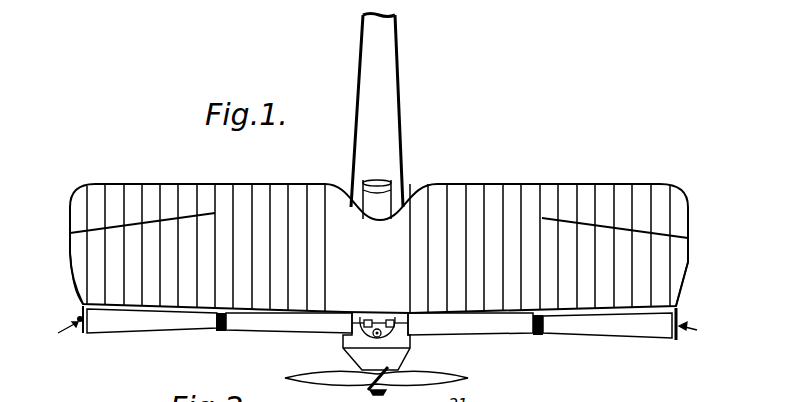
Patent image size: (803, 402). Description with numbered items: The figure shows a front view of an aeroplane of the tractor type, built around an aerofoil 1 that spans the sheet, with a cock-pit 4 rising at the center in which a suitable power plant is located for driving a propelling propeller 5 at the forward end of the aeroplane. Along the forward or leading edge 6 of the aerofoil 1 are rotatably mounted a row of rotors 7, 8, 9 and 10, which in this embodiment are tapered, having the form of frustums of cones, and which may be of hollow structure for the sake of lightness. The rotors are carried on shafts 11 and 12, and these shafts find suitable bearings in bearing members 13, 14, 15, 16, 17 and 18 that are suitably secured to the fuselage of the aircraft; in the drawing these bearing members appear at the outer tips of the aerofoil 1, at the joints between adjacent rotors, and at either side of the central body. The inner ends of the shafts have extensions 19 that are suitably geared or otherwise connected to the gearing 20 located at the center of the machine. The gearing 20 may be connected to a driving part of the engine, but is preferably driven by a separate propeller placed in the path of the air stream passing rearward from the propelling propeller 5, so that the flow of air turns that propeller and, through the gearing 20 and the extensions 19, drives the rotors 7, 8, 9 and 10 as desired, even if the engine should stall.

The aerofoil 1 is at (258, 256).
The cock-pit 4 is at (393, 196).
The propelling propeller 5 is at (414, 377).
The leading edge 6 is at (125, 303).
The rotor 7 is at (191, 323).
The rotor 8 is at (290, 328).
The rotor 9 is at (492, 327).
The rotor 10 is at (615, 330).
The shaft 11 is at (57, 333).
The shaft 12 is at (696, 332).
The bearing member 13 is at (79, 330).
The bearing member 14 is at (220, 332).
The bearing member 15 is at (362, 316).
The bearing member 16 is at (397, 316).
The bearing member 17 is at (538, 337).
The bearing member 18 is at (676, 337).
The extension 19 is at (376, 342).
The gearing 20 is at (381, 317).